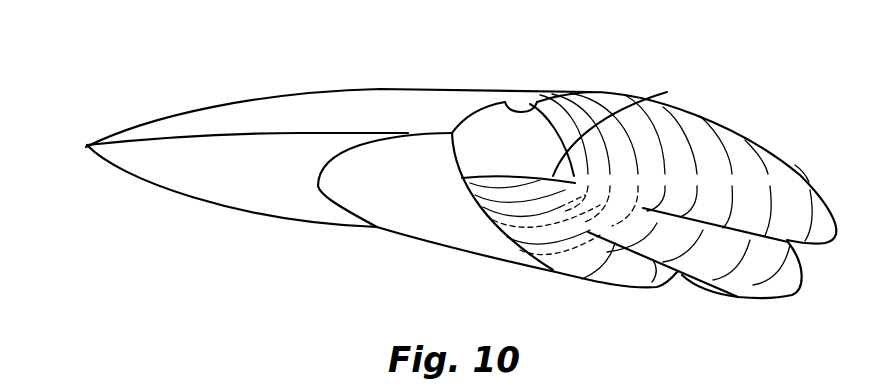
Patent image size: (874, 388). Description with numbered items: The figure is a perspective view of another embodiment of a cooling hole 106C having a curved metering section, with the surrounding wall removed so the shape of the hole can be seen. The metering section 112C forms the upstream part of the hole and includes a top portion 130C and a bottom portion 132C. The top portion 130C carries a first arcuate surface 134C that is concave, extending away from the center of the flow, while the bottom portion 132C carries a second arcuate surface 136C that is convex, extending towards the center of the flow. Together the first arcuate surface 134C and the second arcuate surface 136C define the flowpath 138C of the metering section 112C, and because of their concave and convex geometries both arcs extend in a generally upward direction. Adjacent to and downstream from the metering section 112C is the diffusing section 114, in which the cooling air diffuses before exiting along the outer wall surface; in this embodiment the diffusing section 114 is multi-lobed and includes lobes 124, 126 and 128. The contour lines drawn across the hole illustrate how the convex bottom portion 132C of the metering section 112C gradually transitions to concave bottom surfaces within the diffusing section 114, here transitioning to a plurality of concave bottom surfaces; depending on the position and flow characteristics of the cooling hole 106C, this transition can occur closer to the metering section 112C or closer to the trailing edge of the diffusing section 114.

The cooling hole 106C is at (670, 98).
The top portion 130C is at (460, 122).
The flowpath 138C is at (513, 152).
The first arcuate surface 134C is at (541, 100).
The metering section 112C is at (543, 150).
The second arcuate surface 136C is at (625, 95).
The diffusing section 114 is at (757, 172).
The bottom portion 132C is at (517, 183).
The lobe 124 is at (806, 230).
The lobe 126 is at (758, 284).
The lobe 128 is at (642, 284).